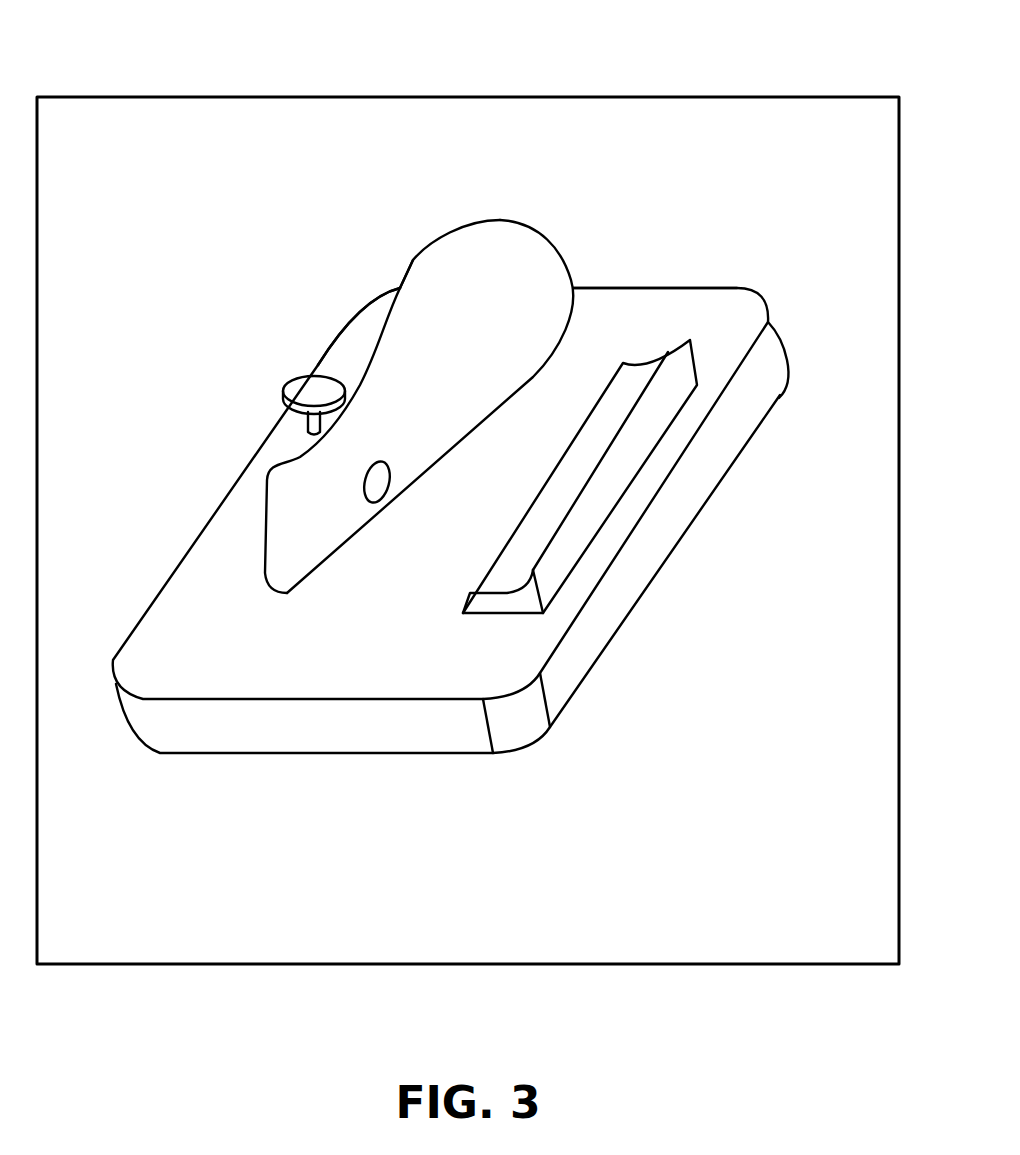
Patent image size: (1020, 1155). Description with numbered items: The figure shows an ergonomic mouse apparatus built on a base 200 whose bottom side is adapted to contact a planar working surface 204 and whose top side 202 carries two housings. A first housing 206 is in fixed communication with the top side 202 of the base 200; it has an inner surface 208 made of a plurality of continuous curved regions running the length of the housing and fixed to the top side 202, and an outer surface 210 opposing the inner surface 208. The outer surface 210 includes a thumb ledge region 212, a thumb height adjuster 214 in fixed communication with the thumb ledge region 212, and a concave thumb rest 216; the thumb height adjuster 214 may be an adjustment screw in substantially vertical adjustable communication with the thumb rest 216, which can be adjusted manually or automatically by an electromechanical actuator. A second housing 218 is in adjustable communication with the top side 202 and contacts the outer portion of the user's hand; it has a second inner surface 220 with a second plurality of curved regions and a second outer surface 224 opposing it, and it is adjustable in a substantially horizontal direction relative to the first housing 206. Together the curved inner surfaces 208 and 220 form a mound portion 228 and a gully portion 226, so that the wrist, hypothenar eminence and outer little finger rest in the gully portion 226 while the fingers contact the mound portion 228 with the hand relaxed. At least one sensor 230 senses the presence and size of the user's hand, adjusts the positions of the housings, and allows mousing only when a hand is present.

The base 200 is at (473, 554).
The top side 202 is at (335, 663).
The planar working surface 204 is at (467, 857).
The first housing 206 is at (360, 320).
The inner surface 208 is at (537, 277).
The outer surface 210 is at (458, 233).
The thumb ledge region 212 is at (293, 443).
The thumb height adjuster 214 is at (302, 426).
The concave thumb rest 216 is at (308, 392).
The second housing 218 is at (615, 405).
The second inner surface 220 is at (583, 468).
The second outer surface 224 is at (617, 467).
The gully portion 226 is at (563, 393).
The mound portion 228 is at (505, 187).
The sensor 230 is at (367, 483).